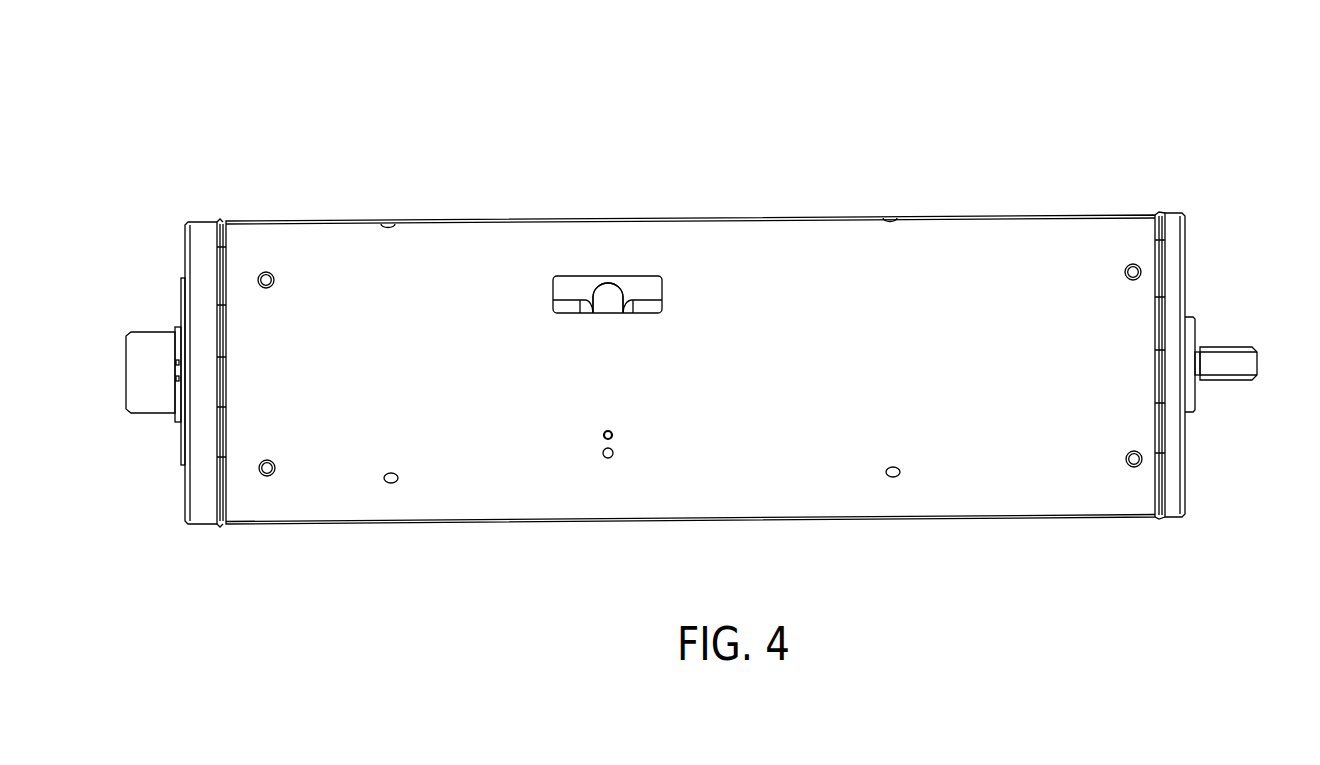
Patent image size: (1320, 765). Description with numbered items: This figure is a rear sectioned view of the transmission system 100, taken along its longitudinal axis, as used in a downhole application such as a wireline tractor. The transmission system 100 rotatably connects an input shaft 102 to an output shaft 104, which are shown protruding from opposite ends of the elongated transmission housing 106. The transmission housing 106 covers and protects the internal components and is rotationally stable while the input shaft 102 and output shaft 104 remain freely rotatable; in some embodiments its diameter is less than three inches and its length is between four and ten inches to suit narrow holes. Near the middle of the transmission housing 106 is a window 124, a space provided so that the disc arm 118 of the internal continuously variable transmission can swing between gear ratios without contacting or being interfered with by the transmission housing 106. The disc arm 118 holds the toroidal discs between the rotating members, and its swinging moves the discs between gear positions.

The transmission system 100 is at (400, 133).
The input shaft 102 is at (157, 342).
The output shaft 104 is at (1225, 345).
The transmission housing 106 is at (787, 228).
The disc arm 118 is at (609, 294).
The window 124 is at (637, 294).